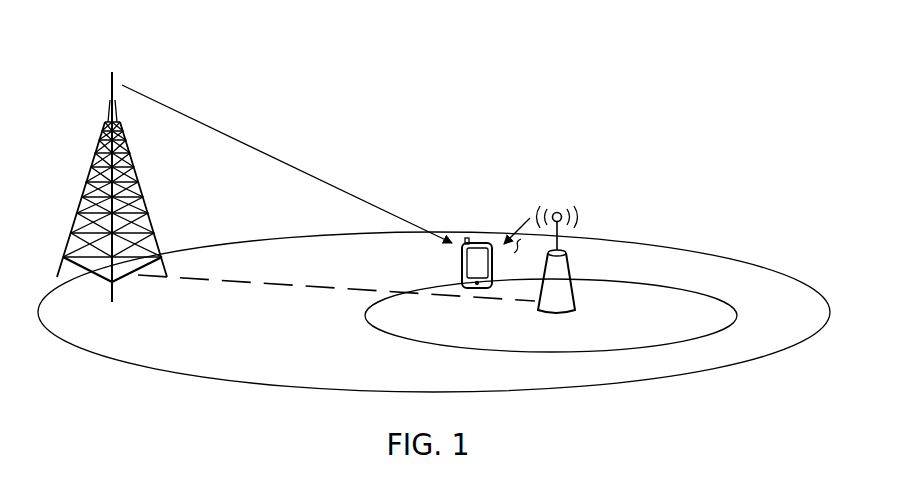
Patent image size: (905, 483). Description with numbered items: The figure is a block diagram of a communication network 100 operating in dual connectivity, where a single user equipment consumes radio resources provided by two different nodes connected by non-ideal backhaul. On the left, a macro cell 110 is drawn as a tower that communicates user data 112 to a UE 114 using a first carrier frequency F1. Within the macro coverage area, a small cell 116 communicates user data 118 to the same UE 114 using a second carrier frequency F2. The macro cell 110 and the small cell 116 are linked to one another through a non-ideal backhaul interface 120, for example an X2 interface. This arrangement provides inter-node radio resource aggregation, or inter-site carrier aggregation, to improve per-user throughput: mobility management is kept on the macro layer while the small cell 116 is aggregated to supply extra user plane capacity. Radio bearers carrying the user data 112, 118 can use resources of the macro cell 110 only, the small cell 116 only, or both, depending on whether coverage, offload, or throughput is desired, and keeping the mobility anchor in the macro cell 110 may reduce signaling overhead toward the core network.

The communication network 100 is at (157, 24).
The macro cell 110 is at (96, 165).
The user data 112 is at (280, 158).
The UE 114 is at (483, 242).
The small cell 116 is at (567, 253).
The user data 118 is at (552, 228).
The non-ideal backhaul interface 120 is at (323, 288).